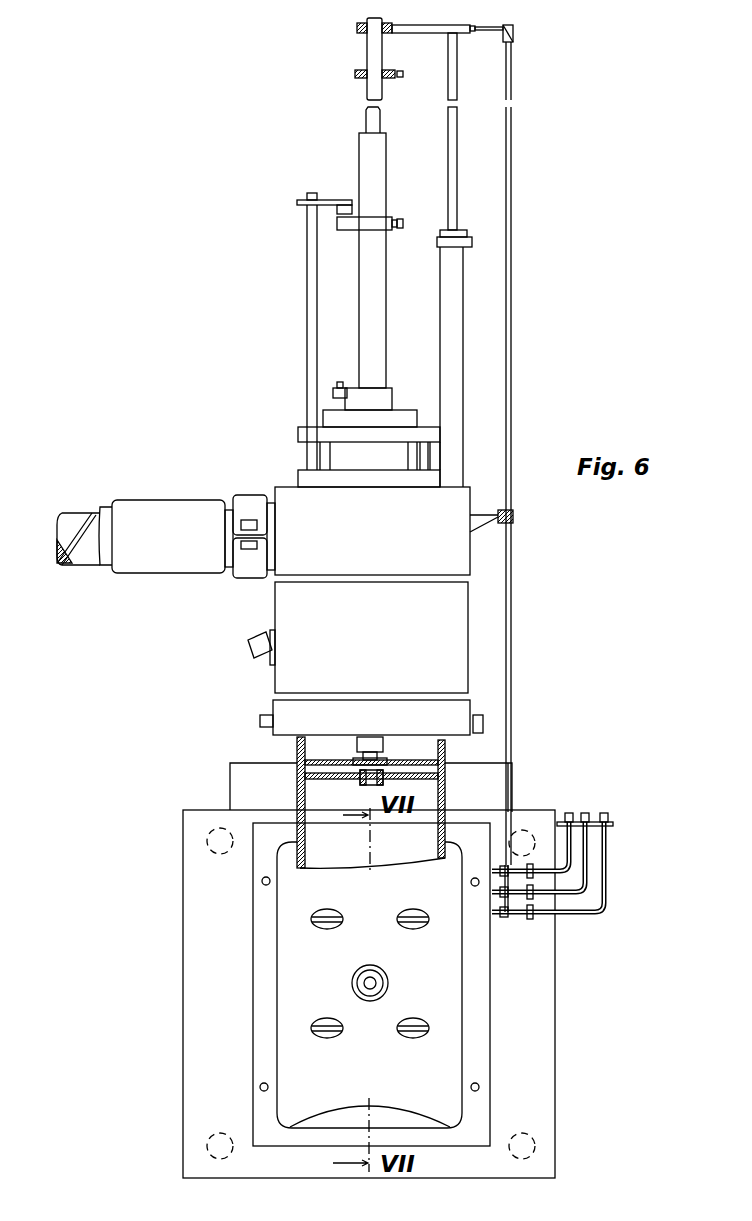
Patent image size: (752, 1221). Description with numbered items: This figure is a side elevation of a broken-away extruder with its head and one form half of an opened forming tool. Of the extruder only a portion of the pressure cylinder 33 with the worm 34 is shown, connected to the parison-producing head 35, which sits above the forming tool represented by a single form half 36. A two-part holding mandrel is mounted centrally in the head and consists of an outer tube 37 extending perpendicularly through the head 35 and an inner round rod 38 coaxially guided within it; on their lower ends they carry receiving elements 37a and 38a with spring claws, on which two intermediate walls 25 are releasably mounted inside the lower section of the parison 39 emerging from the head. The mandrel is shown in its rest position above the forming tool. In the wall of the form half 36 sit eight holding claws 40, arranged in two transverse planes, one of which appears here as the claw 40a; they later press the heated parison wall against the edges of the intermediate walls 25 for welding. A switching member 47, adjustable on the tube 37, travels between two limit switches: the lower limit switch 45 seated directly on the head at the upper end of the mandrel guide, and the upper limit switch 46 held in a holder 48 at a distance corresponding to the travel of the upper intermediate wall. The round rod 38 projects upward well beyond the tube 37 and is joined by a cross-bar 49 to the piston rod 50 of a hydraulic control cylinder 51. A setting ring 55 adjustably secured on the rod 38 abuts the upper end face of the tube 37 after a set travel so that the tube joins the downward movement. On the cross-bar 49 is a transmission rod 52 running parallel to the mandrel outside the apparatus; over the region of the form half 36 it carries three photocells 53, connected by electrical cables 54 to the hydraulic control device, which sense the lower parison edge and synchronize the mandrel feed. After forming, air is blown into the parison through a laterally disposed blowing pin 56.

The cross-bar 49 is at (357, 30).
The setting ring 55 is at (355, 74).
The round rod 38 is at (370, 115).
The second limit switch 46 is at (343, 205).
The piston rod 50 is at (453, 183).
The holder 48 is at (307, 283).
The switching member 47 is at (343, 231).
The control cylinder 51 is at (460, 278).
The tube 37 is at (367, 347).
The transmission rod 52 is at (512, 330).
The first limit switch 45 is at (333, 393).
The worm 34 is at (82, 556).
The pressure cylinder 33 is at (165, 560).
The parison-producing head 35 is at (290, 668).
The receiving element 37a is at (363, 753).
The intermediate walls 25 is at (297, 773).
The parison 39 is at (297, 800).
The receiving element 38a is at (367, 785).
The screw 40a is at (323, 912).
The form half 36 is at (260, 997).
The holding claws 40 is at (325, 1018).
The blowing pin 56 is at (388, 983).
The photocells 53 is at (518, 917).
The electrical cables 54 is at (608, 893).